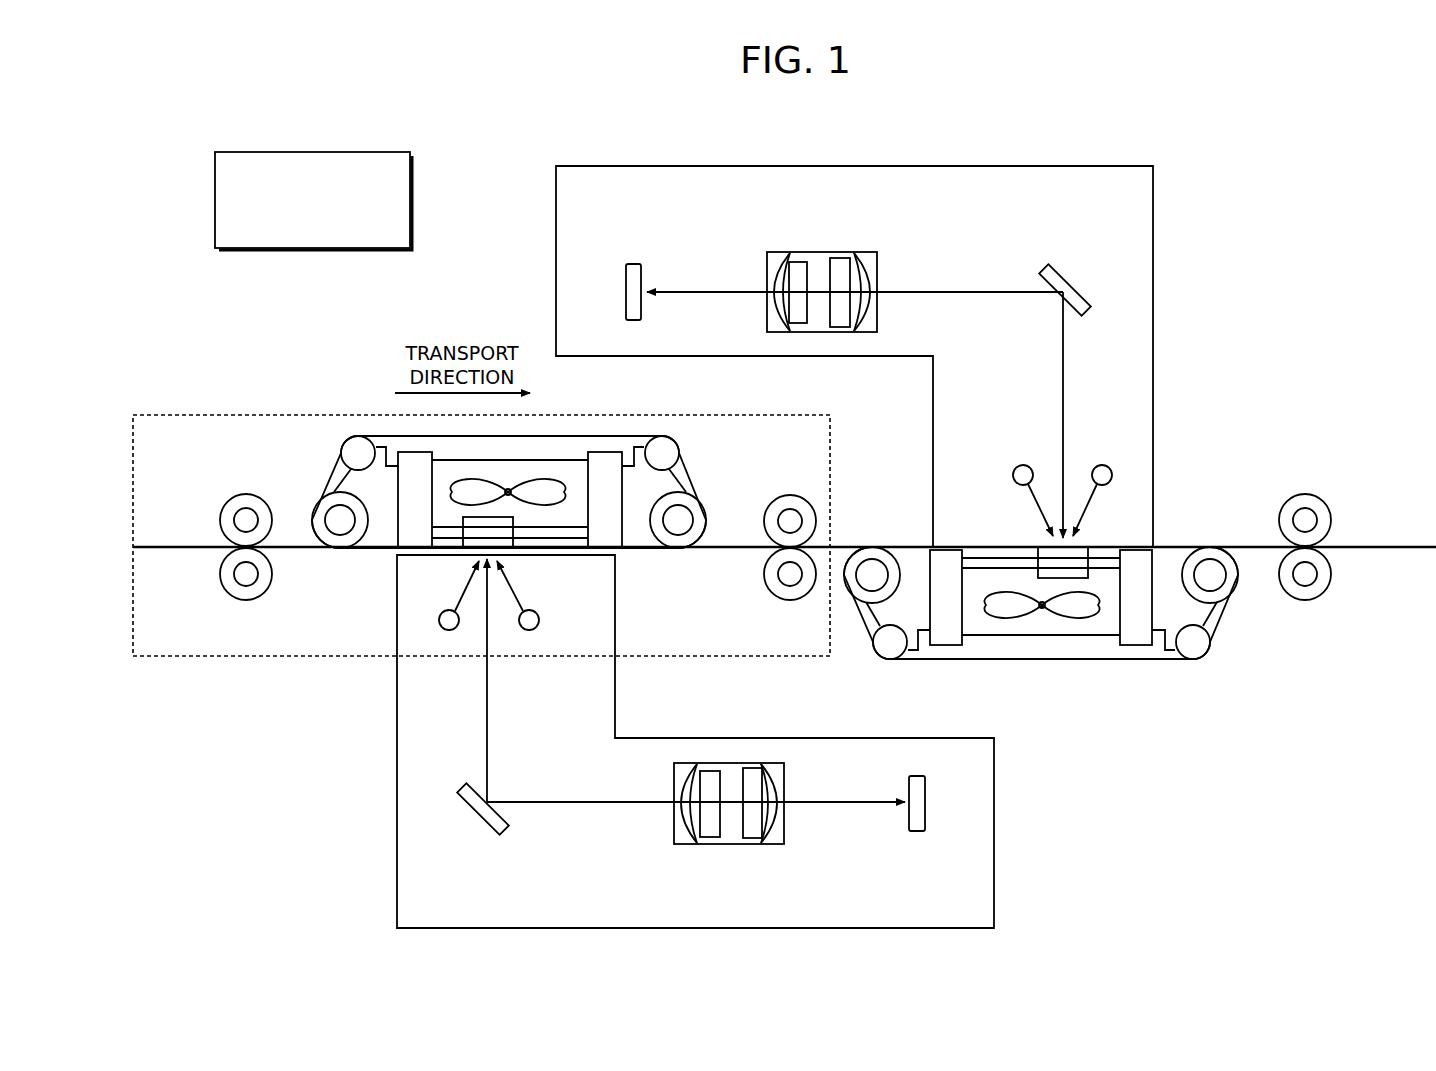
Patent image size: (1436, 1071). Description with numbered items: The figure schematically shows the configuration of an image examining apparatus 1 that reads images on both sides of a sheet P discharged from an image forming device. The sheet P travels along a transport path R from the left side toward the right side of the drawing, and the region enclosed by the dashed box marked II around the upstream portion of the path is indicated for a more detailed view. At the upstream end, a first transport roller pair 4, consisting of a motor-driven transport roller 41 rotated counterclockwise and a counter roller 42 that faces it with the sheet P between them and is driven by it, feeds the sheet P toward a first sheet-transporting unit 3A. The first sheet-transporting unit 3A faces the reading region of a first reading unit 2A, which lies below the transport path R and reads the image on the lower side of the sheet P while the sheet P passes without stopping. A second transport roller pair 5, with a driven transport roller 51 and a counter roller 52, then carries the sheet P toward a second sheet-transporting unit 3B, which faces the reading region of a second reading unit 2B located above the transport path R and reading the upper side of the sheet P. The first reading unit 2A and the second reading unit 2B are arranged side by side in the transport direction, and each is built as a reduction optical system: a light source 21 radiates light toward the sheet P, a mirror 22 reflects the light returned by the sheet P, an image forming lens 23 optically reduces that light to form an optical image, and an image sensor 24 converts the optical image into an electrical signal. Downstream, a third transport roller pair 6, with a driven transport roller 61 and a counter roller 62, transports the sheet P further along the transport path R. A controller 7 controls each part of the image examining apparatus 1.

The image examining apparatus 1 is at (1328, 143).
The first reading unit 2A is at (380, 897).
The second reading unit 2B is at (1177, 195).
The light source 21 is at (1103, 464).
The mirror 22 is at (1079, 281).
The image forming lens 23 is at (838, 251).
The image sensor 24 is at (632, 263).
The first sheet-transporting unit 3A is at (353, 424).
The second sheet-transporting unit 3B is at (1187, 674).
The first transport roller pair 4 is at (210, 493).
The transport roller 41 is at (246, 520).
The counter roller 42 is at (246, 574).
The second transport roller pair 5 is at (809, 541).
The transport roller 51 is at (795, 516).
The counter roller 52 is at (790, 590).
The third transport roller pair 6 is at (1258, 554).
The transport roller 61 is at (1305, 520).
The counter roller 62 is at (1305, 575).
The controller 7 is at (414, 198).
The sheet P is at (906, 545).
The transport path R is at (1415, 550).
The section line II is at (242, 410).